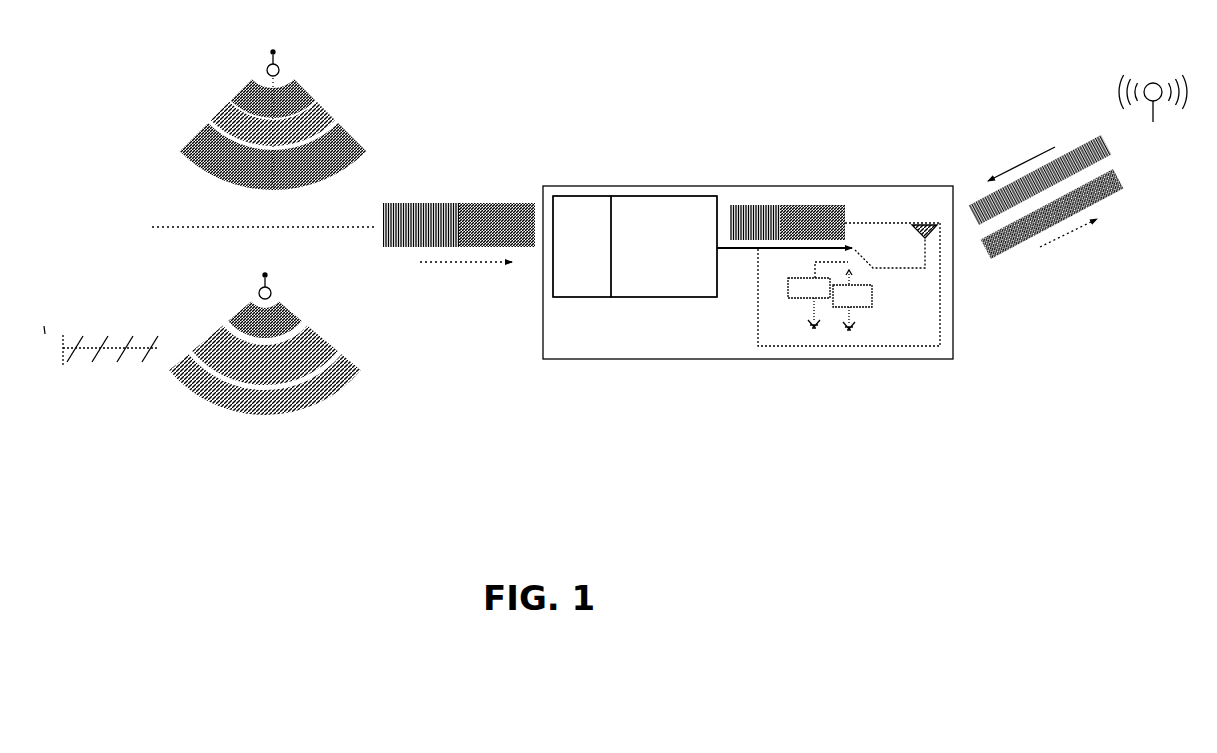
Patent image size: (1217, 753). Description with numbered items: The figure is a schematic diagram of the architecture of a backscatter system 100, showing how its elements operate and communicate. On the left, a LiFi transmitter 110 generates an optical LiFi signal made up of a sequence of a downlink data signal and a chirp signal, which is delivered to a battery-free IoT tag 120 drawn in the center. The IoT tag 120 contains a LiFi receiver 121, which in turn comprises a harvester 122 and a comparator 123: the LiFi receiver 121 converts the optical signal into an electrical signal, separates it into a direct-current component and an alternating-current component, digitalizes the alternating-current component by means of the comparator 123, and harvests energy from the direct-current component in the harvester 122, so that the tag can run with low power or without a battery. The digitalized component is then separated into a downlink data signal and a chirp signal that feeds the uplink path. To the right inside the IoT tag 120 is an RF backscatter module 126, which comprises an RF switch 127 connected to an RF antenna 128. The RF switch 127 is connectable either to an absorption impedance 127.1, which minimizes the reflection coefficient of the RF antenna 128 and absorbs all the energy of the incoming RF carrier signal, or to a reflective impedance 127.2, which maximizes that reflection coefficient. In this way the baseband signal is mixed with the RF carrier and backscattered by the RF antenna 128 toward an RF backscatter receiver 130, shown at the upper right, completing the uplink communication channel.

The backscatter system 100 is at (765, 101).
The LiFi transmitter 110 is at (236, 65).
The battery-free IoT tag 120 is at (721, 365).
The LiFi receiver 121 is at (593, 299).
The harvester 122 is at (582, 246).
The comparator 123 is at (664, 246).
The RF backscatter module 126 is at (912, 352).
The RF switch 127 is at (864, 257).
The absorption impedance 127.1 is at (809, 288).
The reflective impedance 127.2 is at (852, 296).
The RF antenna 128 is at (928, 231).
The RF backscatter receiver 130 is at (1086, 74).